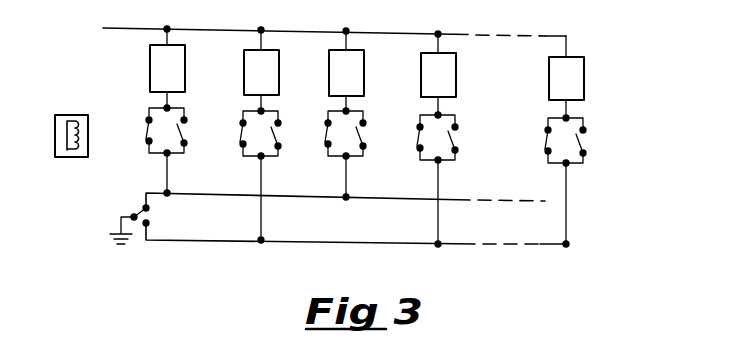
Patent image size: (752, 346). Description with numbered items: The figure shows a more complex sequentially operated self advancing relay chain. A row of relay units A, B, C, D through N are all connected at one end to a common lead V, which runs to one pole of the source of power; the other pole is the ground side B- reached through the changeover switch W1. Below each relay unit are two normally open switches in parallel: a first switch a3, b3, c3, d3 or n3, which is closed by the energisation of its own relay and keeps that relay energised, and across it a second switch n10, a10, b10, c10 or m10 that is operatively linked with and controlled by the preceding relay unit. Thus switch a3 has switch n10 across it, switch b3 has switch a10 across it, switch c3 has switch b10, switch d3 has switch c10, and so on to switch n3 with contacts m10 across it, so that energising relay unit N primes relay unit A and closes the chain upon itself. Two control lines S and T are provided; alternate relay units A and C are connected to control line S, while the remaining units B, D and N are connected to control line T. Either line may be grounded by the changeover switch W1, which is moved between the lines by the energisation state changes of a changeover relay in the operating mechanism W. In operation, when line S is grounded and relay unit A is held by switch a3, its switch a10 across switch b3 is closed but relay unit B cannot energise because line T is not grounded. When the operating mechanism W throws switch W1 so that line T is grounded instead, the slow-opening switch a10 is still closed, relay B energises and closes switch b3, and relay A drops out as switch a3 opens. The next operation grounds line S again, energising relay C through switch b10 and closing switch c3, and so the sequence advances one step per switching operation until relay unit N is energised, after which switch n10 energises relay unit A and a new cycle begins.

The lead V is at (334, 22).
The control line S is at (345, 191).
The control line T is at (356, 231).
The pole of the source of power B- is at (110, 238).
The operating mechanism W is at (66, 109).
The changeover switch W1 is at (126, 220).
The relay unit A is at (167, 68).
The relay unit B is at (261, 72).
The relay unit C is at (346, 73).
The relay unit D is at (438, 75).
The relay unit N is at (566, 78).
The switch n10 is at (140, 130).
The switch a10 is at (233, 132).
The switch b10 is at (319, 132).
The switch c10 is at (409, 134).
The contacts m10 is at (530, 136).
The switch a3 is at (187, 133).
The switch b3 is at (280, 135).
The switch c3 is at (365, 135).
The switch d3 is at (458, 139).
The switch n3 is at (586, 143).